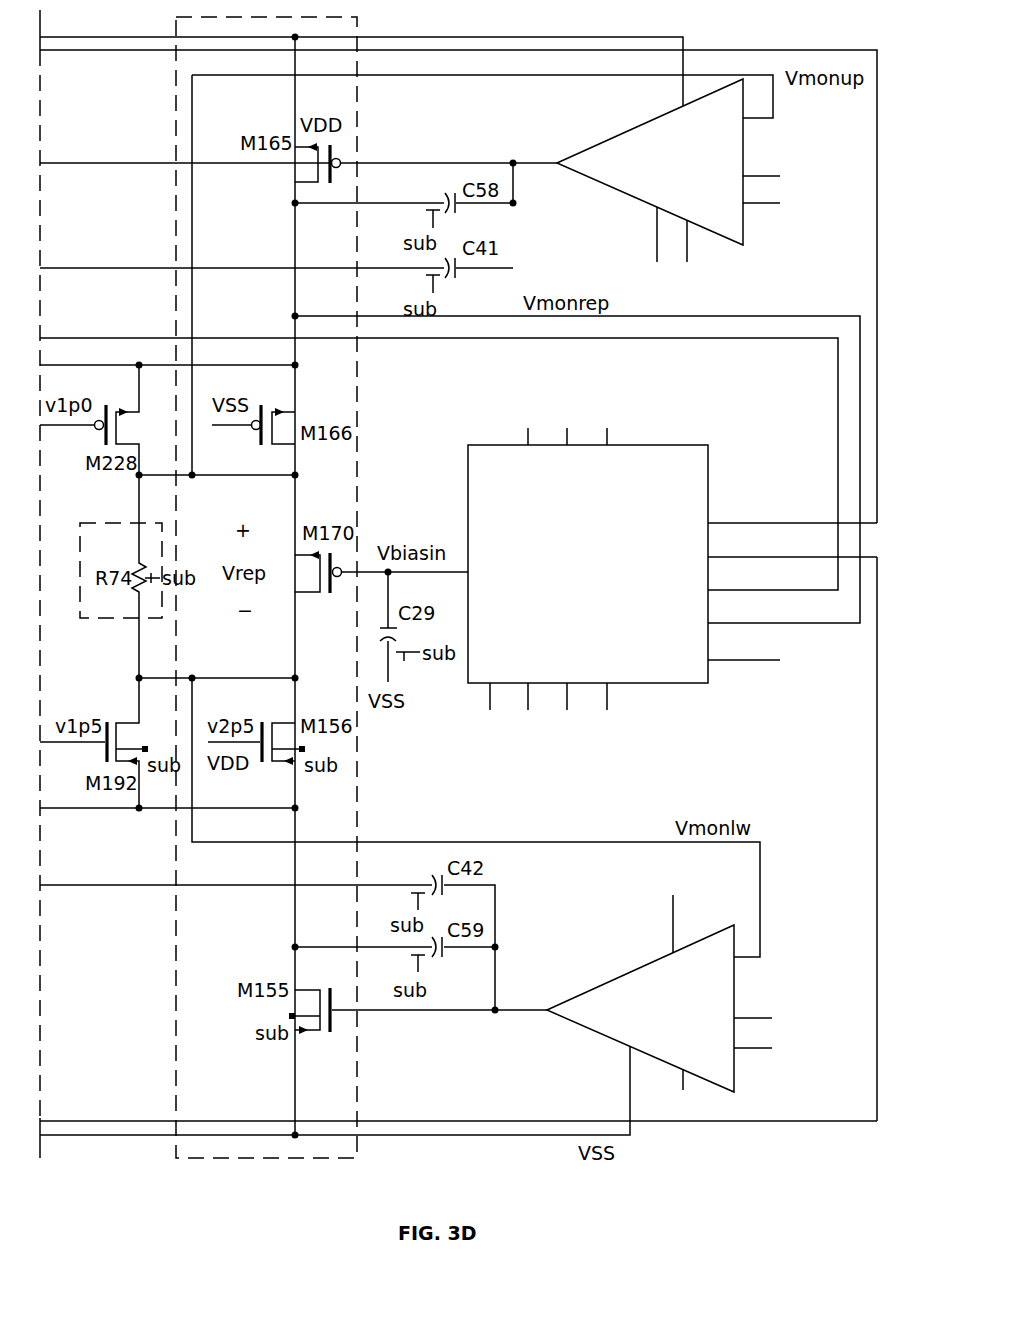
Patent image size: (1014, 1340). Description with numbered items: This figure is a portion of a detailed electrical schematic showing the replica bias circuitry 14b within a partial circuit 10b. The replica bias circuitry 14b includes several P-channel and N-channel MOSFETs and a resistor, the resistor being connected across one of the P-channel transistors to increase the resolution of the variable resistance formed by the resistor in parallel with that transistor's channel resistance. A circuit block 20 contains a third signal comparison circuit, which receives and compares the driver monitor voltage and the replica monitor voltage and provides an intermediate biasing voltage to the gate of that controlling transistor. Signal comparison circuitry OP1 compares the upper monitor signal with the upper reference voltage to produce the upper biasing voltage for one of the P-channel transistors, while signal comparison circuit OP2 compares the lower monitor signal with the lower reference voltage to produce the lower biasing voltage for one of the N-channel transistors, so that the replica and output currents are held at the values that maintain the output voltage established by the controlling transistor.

The replica bias circuitry 14b is at (357, 21).
The partial circuit 10b is at (285, 1208).
The circuit block 20 is at (648, 683).
The signal comparison circuitry OP1 is at (594, 151).
The signal comparison circuit OP2 is at (578, 996).